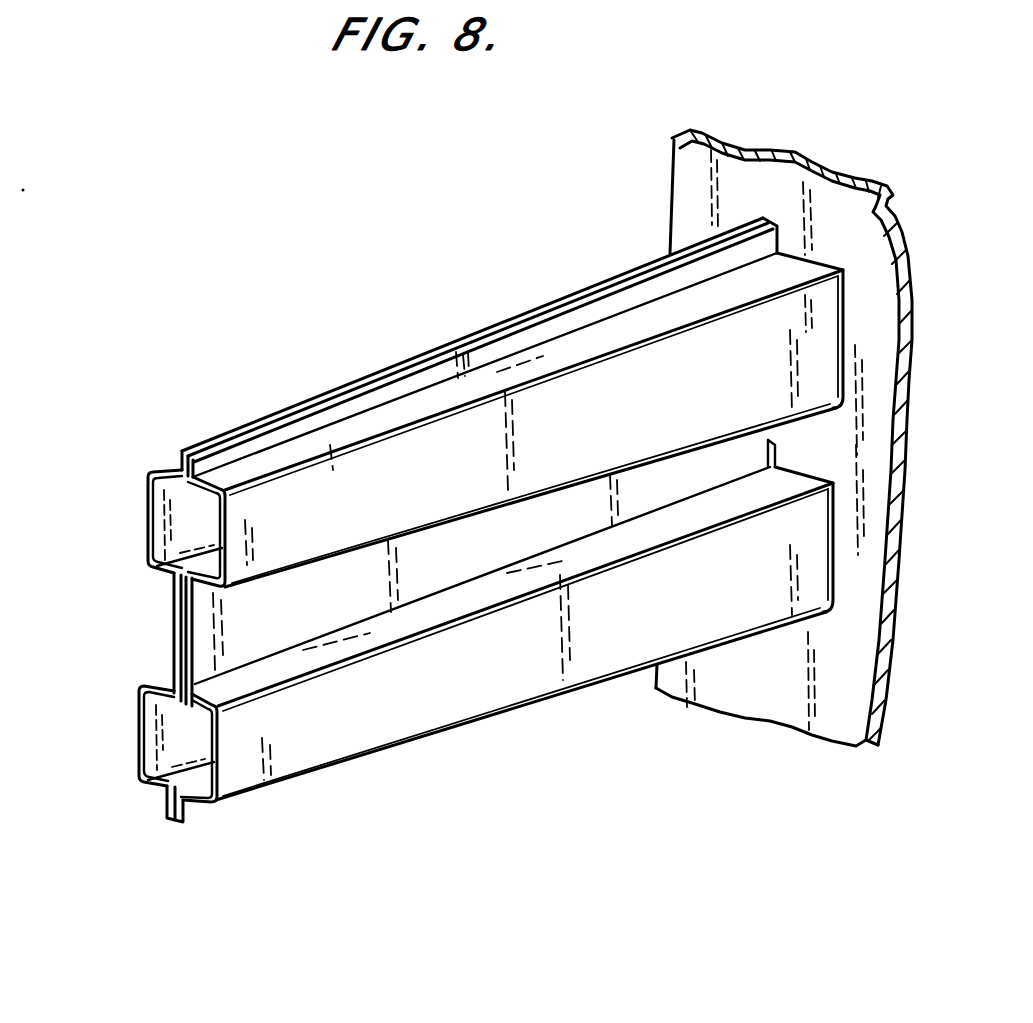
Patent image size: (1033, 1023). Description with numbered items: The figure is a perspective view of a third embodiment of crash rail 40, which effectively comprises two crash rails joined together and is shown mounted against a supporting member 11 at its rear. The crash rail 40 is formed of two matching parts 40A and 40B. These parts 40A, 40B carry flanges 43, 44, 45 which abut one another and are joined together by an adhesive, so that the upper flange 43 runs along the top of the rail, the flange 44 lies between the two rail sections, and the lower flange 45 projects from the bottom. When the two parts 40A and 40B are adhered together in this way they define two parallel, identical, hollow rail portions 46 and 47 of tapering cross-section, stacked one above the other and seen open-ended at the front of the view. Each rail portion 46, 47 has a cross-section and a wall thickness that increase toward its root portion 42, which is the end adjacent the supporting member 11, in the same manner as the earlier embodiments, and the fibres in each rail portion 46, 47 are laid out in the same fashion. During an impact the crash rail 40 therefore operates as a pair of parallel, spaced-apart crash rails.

The wall board 11 is at (698, 175).
The crash rail 40 is at (403, 345).
The matching part 40A is at (143, 494).
The matching part 40B is at (245, 522).
The root portion 42 is at (834, 572).
The flange 43 is at (548, 328).
The flange 44 is at (250, 648).
The flange 45 is at (197, 804).
The rail portion 46 is at (130, 541).
The rail portion 47 is at (125, 739).